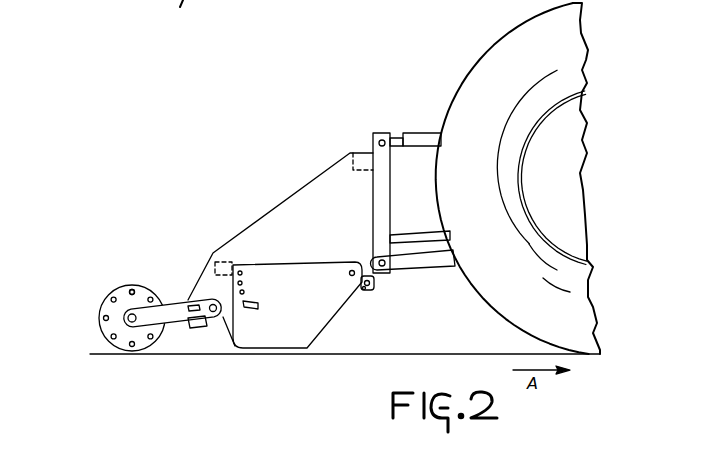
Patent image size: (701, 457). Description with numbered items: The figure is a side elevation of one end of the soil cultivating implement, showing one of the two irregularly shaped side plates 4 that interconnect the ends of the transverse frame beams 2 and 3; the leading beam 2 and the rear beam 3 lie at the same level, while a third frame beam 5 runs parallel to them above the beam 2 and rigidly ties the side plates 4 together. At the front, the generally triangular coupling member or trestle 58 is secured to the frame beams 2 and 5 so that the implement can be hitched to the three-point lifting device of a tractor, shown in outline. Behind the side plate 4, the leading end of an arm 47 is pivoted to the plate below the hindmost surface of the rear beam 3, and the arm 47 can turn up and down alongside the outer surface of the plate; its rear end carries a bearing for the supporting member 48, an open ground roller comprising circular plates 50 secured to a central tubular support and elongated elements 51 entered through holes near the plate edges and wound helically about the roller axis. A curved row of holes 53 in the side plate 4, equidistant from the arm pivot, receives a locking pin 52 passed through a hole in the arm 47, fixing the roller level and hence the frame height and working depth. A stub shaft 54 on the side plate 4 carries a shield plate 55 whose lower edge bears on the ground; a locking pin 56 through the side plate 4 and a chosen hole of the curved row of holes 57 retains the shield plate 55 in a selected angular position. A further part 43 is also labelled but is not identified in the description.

The frame beam 2 is at (367, 276).
The frame beam 3 is at (233, 264).
The side plate 4 is at (309, 184).
The third frame beam 5 is at (359, 152).
The pivot pin 43 is at (366, 291).
The arm 47 is at (175, 303).
The supporting member 48 is at (107, 314).
The circular plate 50 is at (143, 291).
The elongated element 51 is at (110, 299).
The locking pin 52 is at (207, 328).
The hole 53 is at (190, 328).
The stub shaft 54 is at (349, 275).
The shield plate 55 is at (288, 272).
The locking pin 56 is at (252, 308).
The hole 57 is at (245, 282).
The coupling member or trestle 58 is at (375, 193).